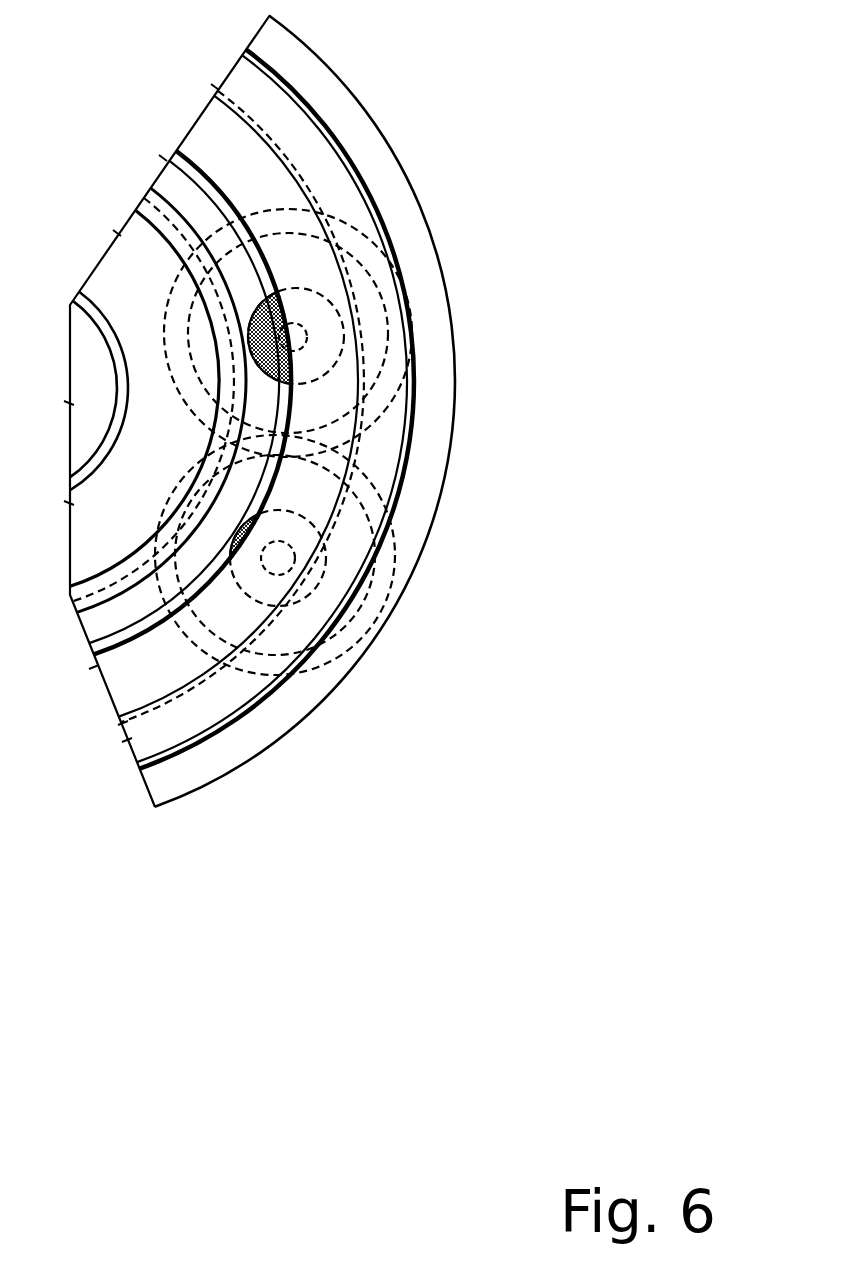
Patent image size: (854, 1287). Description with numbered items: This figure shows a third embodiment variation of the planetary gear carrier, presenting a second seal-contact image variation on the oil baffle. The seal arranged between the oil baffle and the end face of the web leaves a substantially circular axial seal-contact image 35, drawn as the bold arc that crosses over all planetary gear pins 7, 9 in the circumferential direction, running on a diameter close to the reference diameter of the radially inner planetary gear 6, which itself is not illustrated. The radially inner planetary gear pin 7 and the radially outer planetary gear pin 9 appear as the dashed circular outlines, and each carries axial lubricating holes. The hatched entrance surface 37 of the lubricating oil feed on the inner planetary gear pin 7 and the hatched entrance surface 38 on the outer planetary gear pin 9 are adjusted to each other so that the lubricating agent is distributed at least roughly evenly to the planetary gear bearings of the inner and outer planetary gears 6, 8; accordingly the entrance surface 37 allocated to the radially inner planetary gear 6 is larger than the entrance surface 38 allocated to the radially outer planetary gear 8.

The radially inner planetary gear 6 is at (357, 240).
The seal-contact image 35 is at (273, 277).
The entrance surface 37 is at (287, 310).
The radially inner planetary gear pin 7 is at (323, 375).
The entrance surface 38 is at (250, 530).
The radially outer planetary gear 8 is at (310, 597).
The radially outer planetary gear pin 9 is at (370, 620).